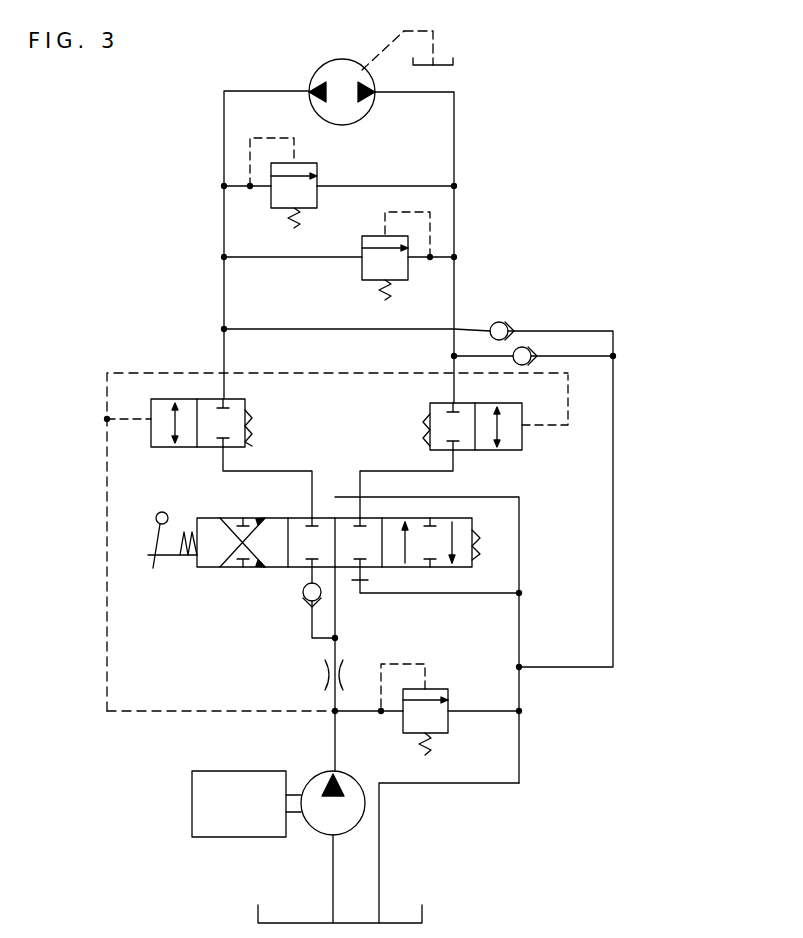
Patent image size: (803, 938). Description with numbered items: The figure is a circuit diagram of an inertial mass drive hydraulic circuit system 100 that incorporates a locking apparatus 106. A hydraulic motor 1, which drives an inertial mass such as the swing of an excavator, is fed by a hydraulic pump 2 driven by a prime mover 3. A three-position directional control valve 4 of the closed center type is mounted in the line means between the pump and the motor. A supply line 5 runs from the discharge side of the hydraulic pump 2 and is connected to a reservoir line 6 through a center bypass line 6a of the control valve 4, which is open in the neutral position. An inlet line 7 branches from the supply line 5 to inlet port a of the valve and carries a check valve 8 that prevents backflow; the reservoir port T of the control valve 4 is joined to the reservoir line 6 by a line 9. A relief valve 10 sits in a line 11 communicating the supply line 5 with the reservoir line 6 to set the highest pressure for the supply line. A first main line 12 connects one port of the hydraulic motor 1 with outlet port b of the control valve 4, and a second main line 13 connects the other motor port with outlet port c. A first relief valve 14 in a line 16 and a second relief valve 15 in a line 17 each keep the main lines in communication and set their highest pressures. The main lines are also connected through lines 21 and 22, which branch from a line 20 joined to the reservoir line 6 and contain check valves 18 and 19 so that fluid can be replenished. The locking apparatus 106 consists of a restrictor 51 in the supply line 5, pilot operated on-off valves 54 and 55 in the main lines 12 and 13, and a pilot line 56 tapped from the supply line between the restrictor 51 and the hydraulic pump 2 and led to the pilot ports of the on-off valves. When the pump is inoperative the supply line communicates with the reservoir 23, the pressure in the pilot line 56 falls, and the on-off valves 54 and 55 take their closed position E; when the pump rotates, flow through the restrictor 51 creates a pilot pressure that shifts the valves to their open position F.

The hydraulic motor 1 is at (318, 75).
The hydraulic pump 2 is at (330, 770).
The prime mover 3 is at (192, 783).
The three-position directional control valve 4 is at (210, 517).
The supply line 5 is at (336, 745).
The reservoir line 6 is at (522, 558).
The center bypass line 6a is at (336, 620).
The inlet line 7 is at (312, 625).
The check valve 8 is at (304, 598).
The line 9 is at (468, 594).
The relief valve 10 is at (448, 733).
The line 11 is at (482, 710).
The first main line 12 is at (222, 138).
The second main line 13 is at (456, 154).
The first relief valve 14 is at (314, 176).
The second relief valve 15 is at (362, 270).
The line 16 is at (408, 186).
The line 17 is at (292, 262).
The check valve 18 is at (503, 324).
The check valve 19 is at (535, 360).
The line 20 is at (613, 442).
The line 21 is at (564, 330).
The line 22 is at (604, 362).
The reservoir 23 is at (424, 918).
The restrictor 51 is at (320, 680).
The pilot operated on-off valve 54 is at (152, 396).
The pilot operated on-off valve 55 is at (522, 440).
The pilot line 56 is at (307, 378).
The inertial mass drive hydraulic circuit system 100 is at (474, 110).
The locking apparatus 106 is at (98, 392).